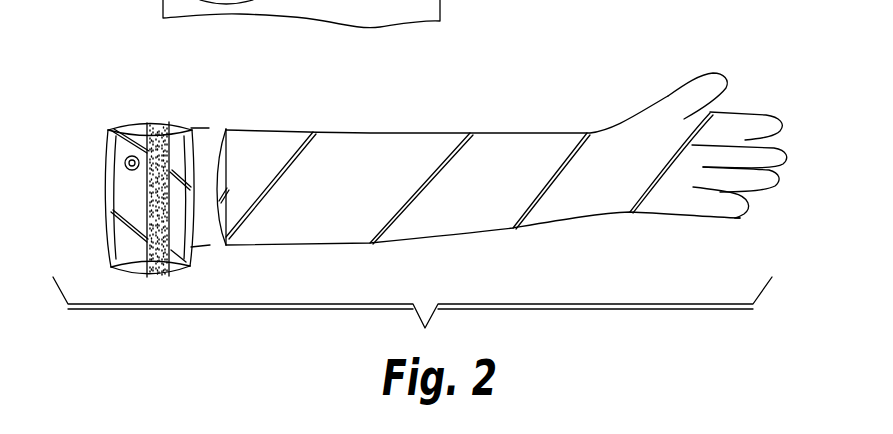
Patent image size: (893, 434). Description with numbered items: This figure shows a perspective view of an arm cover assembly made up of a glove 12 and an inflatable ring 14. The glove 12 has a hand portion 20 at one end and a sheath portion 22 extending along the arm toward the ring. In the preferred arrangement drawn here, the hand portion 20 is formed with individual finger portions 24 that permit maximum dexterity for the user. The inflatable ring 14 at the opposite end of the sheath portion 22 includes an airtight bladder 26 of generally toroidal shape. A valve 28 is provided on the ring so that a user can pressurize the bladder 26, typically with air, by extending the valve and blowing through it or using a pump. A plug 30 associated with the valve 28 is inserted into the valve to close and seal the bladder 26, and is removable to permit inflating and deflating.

The glove 12 is at (490, 148).
The inflatable ring 14 is at (128, 273).
The hand portion 20 is at (723, 70).
The sheath portion 22 is at (395, 126).
The finger portions 24 is at (778, 148).
The airtight bladder 26 is at (110, 213).
The valve 28 is at (125, 167).
The plug 30 is at (127, 159).